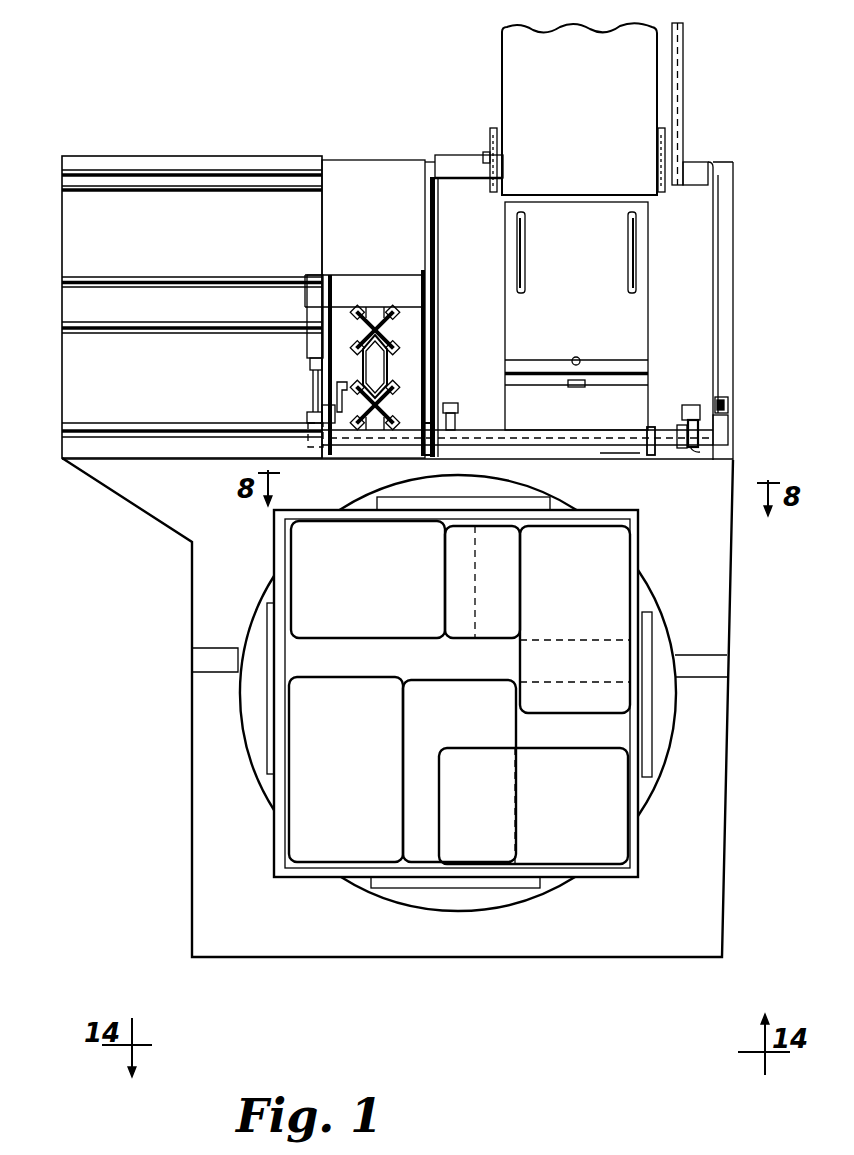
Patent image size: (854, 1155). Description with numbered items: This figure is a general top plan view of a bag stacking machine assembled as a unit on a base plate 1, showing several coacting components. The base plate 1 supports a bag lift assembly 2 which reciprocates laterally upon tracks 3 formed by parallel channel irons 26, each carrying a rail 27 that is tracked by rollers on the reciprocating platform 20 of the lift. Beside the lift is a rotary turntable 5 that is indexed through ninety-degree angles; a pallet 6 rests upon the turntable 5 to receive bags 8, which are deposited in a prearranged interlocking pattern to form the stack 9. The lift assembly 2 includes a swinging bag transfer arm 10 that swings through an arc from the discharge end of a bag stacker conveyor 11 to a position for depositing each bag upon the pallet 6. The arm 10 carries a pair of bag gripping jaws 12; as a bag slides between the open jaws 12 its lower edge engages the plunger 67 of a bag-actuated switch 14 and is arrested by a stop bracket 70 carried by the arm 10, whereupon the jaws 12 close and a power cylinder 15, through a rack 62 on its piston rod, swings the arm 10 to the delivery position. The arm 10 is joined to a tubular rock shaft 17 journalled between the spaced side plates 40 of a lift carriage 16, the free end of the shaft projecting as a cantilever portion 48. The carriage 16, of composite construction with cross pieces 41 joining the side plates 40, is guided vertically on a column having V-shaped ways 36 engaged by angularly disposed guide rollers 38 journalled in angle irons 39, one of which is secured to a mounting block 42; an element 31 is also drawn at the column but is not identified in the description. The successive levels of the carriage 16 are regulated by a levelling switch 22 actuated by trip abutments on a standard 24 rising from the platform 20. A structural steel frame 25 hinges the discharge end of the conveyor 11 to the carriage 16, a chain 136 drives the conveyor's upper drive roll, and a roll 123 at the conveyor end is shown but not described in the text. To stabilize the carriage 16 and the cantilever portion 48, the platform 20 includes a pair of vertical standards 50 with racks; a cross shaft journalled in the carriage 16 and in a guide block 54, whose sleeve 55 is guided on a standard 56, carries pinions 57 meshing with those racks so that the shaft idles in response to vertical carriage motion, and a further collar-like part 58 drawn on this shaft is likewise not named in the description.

The base plate 1 is at (190, 505).
The bag lift assembly 2 is at (452, 372).
The tracks 3 is at (80, 378).
The rotary turntable 5 is at (488, 905).
The pallet 6 is at (638, 866).
The bags 8 is at (432, 630).
The stack 9 is at (630, 836).
The swinging bag transfer arm 10 is at (632, 318).
The bag stacker conveyor 11 is at (576, 178).
The bag gripping jaws 12 is at (528, 283).
The bag-actuated switch 14 is at (574, 387).
The power cylinder 15 is at (302, 346).
The lift carriage 16 is at (432, 345).
The rock shaft 17 is at (601, 459).
The reciprocating platform 20 is at (358, 179).
The levelling switch 22 is at (309, 412).
The standard 24 is at (320, 384).
The structural steel frame 25 is at (453, 175).
The channel irons 26 is at (106, 277).
The rail 27 is at (107, 289).
The gripper body 31 is at (375, 366).
The V-shaped ways 36 is at (385, 386).
The guide rollers 38 is at (388, 323).
The angle irons 39 is at (366, 318).
The side plates 40 is at (326, 302).
The cross pieces 41 is at (354, 284).
The mounting block 42 is at (346, 459).
The cantilever portion 48 is at (644, 458).
The vertical standards 50 is at (680, 407).
The guide block 54 is at (730, 428).
The sleeve 55 is at (726, 402).
The standard 56 is at (730, 403).
The pinions 57 is at (703, 456).
The collar 58 is at (648, 422).
The rack 62 is at (316, 396).
The plunger 67 is at (582, 358).
The stop bracket 70 is at (550, 360).
The roll 123 is at (538, 178).
The chain 136 is at (688, 55).